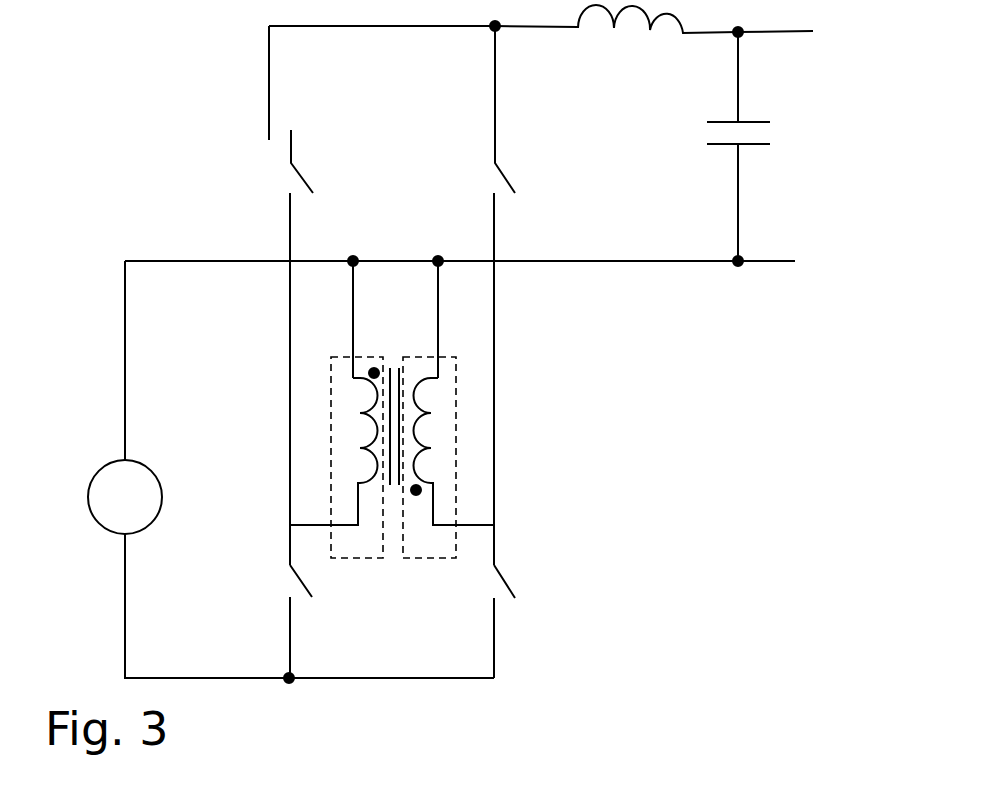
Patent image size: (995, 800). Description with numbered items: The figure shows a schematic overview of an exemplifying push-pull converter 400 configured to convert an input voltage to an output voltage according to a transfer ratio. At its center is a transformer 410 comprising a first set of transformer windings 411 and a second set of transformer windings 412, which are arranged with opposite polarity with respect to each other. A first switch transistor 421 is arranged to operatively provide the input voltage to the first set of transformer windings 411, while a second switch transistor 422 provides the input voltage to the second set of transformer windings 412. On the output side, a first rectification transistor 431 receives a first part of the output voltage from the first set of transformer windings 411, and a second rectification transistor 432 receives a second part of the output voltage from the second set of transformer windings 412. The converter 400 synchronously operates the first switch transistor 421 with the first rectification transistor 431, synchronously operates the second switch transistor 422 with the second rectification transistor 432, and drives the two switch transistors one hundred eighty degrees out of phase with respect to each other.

The push-pull converter 400 is at (122, 145).
The transformer 410 is at (392, 460).
The first set of transformer windings 411 is at (342, 558).
The second set of transformer windings 412 is at (415, 558).
The first switch transistor 421 is at (263, 621).
The second switch transistor 422 is at (529, 621).
The first rectification transistor 431 is at (259, 165).
The second rectification transistor 432 is at (462, 113).